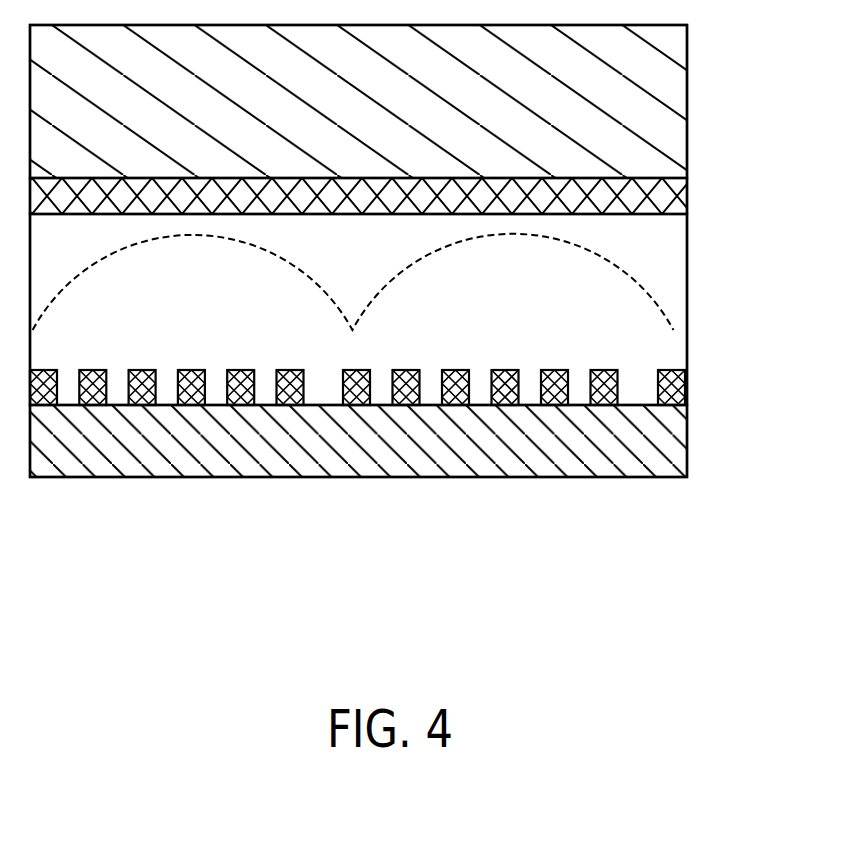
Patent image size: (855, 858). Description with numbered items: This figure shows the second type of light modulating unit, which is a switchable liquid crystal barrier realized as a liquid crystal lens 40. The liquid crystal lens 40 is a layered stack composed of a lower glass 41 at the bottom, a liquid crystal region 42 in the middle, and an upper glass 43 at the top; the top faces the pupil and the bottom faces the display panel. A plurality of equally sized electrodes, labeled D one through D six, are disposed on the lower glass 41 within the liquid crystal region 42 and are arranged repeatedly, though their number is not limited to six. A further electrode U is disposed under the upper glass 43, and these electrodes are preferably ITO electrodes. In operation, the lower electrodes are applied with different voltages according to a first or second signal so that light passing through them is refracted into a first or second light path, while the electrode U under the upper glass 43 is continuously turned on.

The liquid crystal lens 40 is at (755, 70).
The lower glass 41 is at (687, 438).
The liquid crystal region 42 is at (687, 270).
The upper glass 43 is at (687, 78).
The electrode U is at (687, 192).